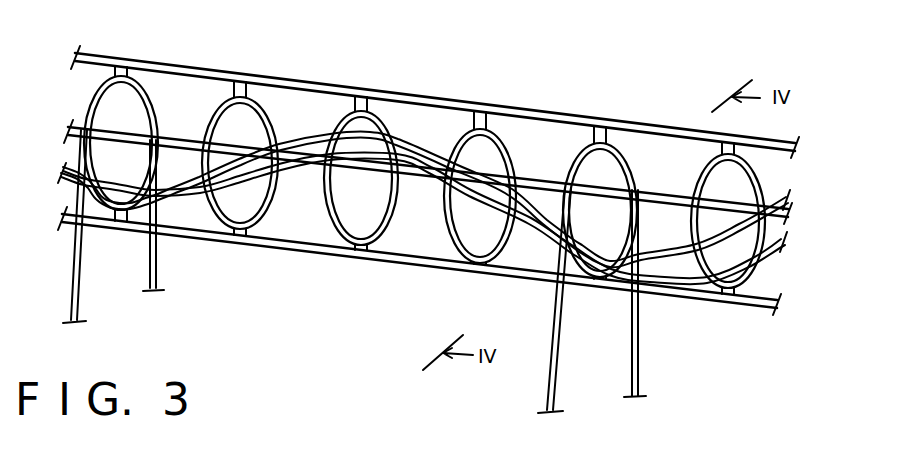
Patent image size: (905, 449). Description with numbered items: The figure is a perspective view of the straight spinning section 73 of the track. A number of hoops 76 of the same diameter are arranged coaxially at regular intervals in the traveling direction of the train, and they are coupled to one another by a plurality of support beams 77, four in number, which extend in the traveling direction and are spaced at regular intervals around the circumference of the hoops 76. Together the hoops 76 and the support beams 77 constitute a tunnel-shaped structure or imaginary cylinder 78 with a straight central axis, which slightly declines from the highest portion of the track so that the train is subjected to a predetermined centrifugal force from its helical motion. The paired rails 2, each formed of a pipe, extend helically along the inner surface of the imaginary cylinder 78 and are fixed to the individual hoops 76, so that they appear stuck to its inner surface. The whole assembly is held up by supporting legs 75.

The rails 2 is at (443, 231).
The straight spinning section 73 is at (540, 90).
The supporting legs 75 is at (84, 280).
The hoops 76 is at (638, 173).
The support beams 77 is at (407, 104).
The imaginary cylinder 78 is at (291, 78).